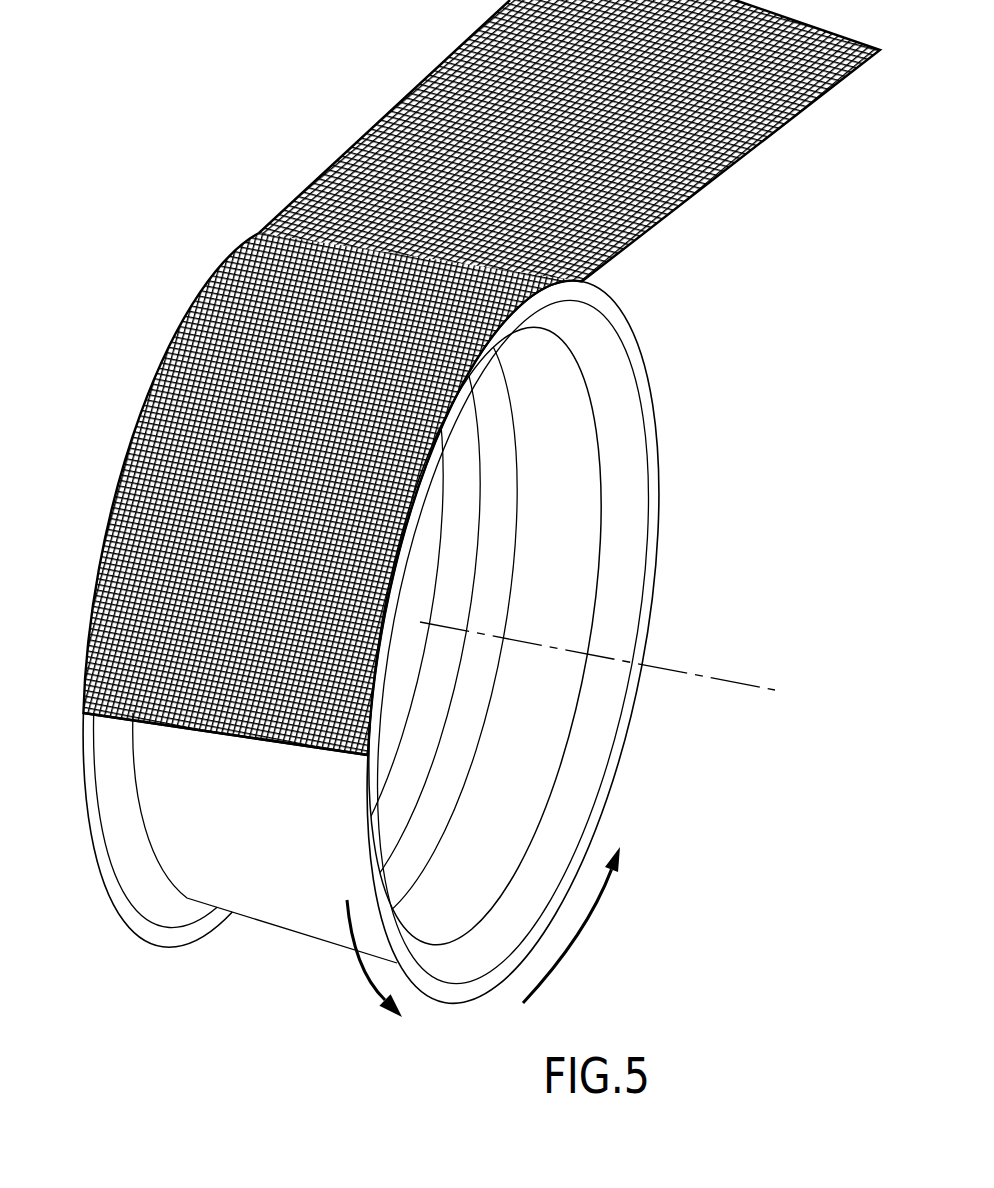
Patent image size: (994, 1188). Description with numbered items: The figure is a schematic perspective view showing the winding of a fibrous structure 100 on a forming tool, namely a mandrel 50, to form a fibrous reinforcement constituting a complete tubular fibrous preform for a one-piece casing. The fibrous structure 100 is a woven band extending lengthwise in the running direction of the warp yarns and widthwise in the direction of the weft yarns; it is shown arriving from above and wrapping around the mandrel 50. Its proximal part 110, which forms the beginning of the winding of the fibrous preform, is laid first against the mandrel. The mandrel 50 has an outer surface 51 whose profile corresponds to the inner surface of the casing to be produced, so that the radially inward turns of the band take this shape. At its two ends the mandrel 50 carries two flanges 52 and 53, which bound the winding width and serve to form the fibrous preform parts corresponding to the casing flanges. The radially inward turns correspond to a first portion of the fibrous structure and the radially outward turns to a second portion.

The fibrous structure 100 is at (481, 405).
The proximal part 110 is at (262, 745).
The mandrel 50 is at (420, 654).
The outer surface 51 is at (228, 888).
The flange 52 is at (462, 997).
The flange 53 is at (165, 937).